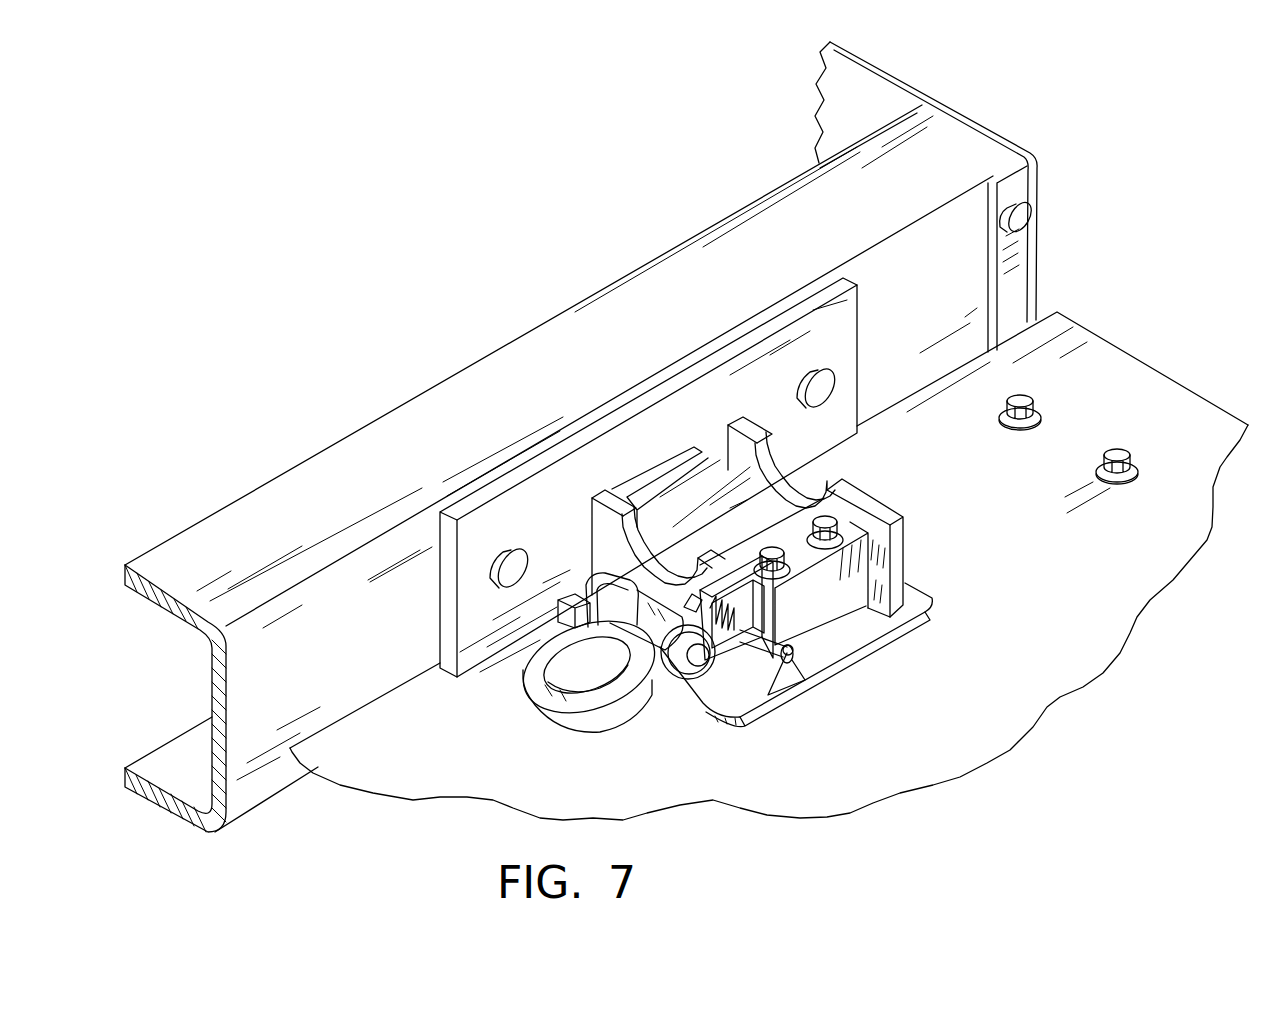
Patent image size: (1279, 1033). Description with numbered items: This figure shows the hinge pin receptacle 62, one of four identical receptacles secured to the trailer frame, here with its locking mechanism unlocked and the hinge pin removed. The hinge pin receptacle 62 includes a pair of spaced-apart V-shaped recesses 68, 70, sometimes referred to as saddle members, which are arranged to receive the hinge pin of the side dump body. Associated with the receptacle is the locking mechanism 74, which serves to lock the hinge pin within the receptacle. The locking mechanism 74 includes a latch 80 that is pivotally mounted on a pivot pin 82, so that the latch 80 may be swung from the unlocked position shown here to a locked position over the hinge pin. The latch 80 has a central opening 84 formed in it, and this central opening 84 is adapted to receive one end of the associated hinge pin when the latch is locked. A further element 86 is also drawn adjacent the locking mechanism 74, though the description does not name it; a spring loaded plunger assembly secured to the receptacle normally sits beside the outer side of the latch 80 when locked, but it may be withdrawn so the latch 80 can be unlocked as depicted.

The second hinge pin receptacle 62 is at (884, 489).
The V-shaped recess 68 is at (795, 462).
The V-shaped recess 70 is at (645, 530).
The locking mechanism 74 is at (557, 687).
The latch 80 is at (530, 708).
The pivot pin 82 is at (707, 660).
The central opening 84 is at (587, 682).
The retaining clip 86 is at (787, 643).